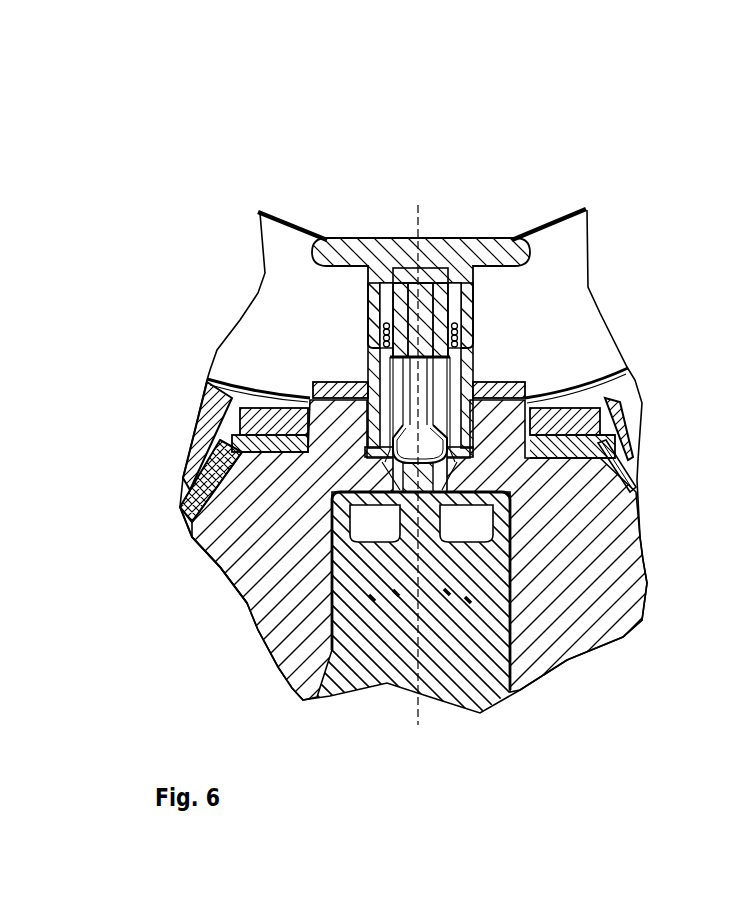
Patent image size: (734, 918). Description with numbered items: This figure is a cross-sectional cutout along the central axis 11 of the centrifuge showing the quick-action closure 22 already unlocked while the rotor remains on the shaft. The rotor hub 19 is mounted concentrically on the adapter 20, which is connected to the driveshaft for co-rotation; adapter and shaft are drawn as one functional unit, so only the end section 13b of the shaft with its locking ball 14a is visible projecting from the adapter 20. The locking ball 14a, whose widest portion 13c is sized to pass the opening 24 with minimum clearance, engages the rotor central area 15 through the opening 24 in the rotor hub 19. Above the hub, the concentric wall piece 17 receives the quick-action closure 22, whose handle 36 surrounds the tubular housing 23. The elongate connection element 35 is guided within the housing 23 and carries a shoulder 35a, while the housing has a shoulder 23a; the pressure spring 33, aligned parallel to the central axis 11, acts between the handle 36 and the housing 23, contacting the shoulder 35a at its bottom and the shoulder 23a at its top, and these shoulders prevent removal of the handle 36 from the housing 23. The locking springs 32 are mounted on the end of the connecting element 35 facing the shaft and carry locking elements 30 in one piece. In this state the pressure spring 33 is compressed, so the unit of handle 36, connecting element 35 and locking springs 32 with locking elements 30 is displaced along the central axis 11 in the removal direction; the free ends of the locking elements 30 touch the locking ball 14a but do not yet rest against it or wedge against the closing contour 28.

The central axis 11 is at (406, 456).
The quick-action closure 22 is at (590, 220).
The handle 36 is at (380, 262).
The shoulder 23a is at (367, 282).
The pressure spring 33 is at (378, 330).
The rotor central area 15 is at (360, 383).
The locking ball 14a is at (206, 378).
The widest portion 13c is at (375, 500).
The end section 13b is at (370, 533).
The rotor hub 19 is at (270, 640).
The connecting element 35 is at (472, 282).
The shoulder 35a is at (477, 357).
The housing 23 is at (515, 359).
The locking springs 32 is at (640, 390).
The wall piece 17 is at (632, 432).
The locking elements 30 is at (630, 472).
The opening 24 is at (465, 478).
The closing contour 28 is at (512, 510).
The adapter 20 is at (470, 557).